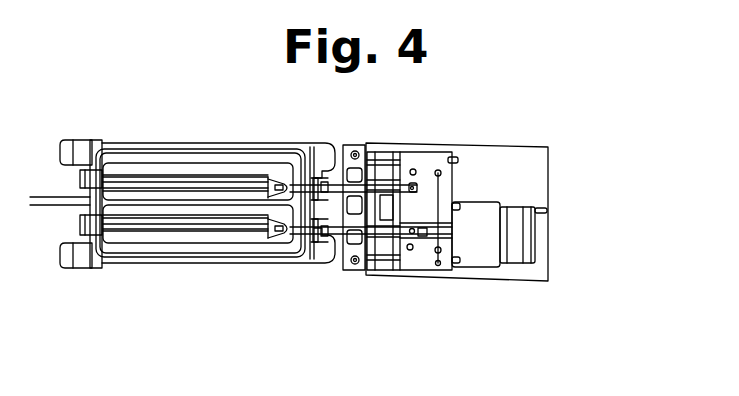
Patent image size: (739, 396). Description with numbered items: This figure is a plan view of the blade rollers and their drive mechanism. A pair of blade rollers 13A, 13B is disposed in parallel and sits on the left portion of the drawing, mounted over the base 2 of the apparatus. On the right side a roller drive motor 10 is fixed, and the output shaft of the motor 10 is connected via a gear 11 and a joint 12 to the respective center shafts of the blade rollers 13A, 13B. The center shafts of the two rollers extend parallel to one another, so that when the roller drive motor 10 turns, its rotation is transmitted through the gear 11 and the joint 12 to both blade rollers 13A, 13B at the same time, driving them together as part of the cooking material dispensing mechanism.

The base 2 is at (63, 255).
The blade roller 13A is at (186, 162).
The blade roller 13B is at (192, 246).
The joint 12 is at (334, 176).
The gear 11 is at (382, 258).
The roller drive motor 10 is at (472, 245).